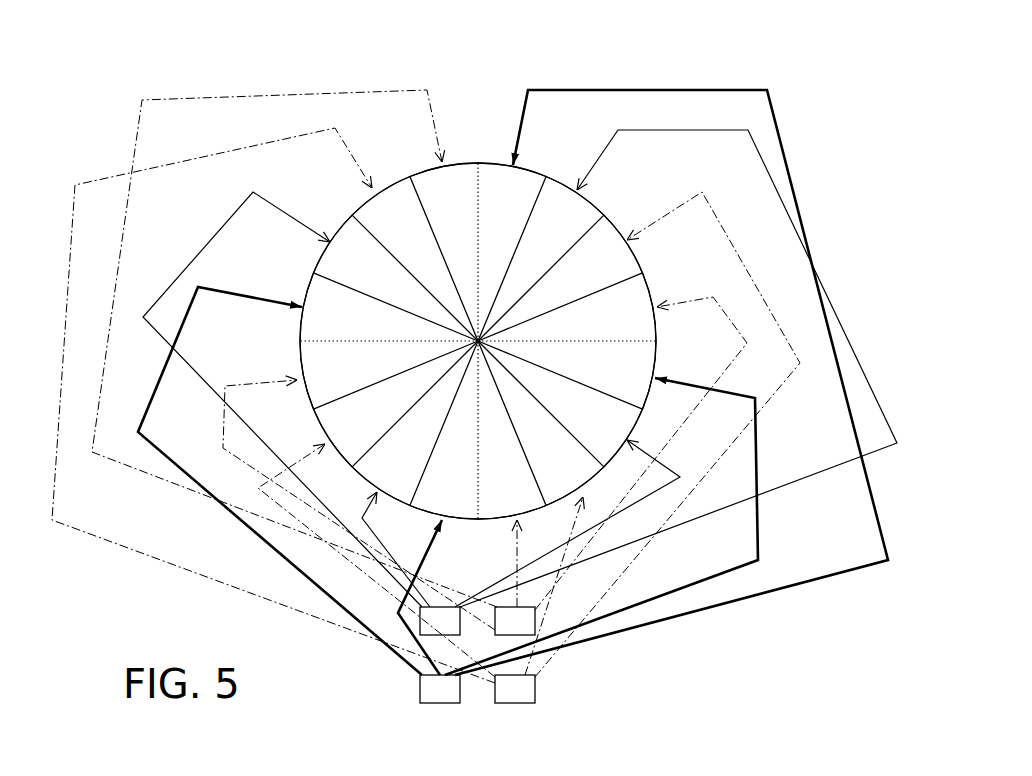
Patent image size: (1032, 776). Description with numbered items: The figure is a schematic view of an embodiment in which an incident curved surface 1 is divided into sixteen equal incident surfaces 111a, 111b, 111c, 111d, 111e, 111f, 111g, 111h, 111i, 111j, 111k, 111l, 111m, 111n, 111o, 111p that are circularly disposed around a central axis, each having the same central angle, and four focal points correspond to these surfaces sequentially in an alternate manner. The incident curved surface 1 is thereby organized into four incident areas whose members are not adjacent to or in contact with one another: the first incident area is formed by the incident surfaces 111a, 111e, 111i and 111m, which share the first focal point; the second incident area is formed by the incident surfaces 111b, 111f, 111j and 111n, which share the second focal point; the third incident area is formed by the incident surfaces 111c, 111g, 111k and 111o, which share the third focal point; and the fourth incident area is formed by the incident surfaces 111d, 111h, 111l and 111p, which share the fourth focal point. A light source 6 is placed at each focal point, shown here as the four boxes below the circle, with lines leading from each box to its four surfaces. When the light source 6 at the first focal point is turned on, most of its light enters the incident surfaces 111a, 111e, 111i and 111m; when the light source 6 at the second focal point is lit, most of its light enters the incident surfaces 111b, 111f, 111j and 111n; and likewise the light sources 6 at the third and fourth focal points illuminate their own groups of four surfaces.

The incident curved surface 1 is at (466, 163).
The light source 6 is at (420, 628).
The incident surface 111a is at (512, 430).
The incident surface 111b is at (541, 423).
The incident surface 111c is at (560, 404).
The incident surface 111d is at (567, 375).
The incident surface 111e is at (567, 307).
The incident surface 111f is at (560, 278).
The incident surface 111g is at (541, 259).
The incident surface 111h is at (512, 252).
The incident surface 111i is at (444, 252).
The incident surface 111j is at (415, 259).
The incident surface 111k is at (396, 278).
The incident surface 111l is at (389, 307).
The incident surface 111m is at (389, 375).
The incident surface 111n is at (396, 404).
The incident surface 111o is at (415, 423).
The incident surface 111p is at (444, 430).